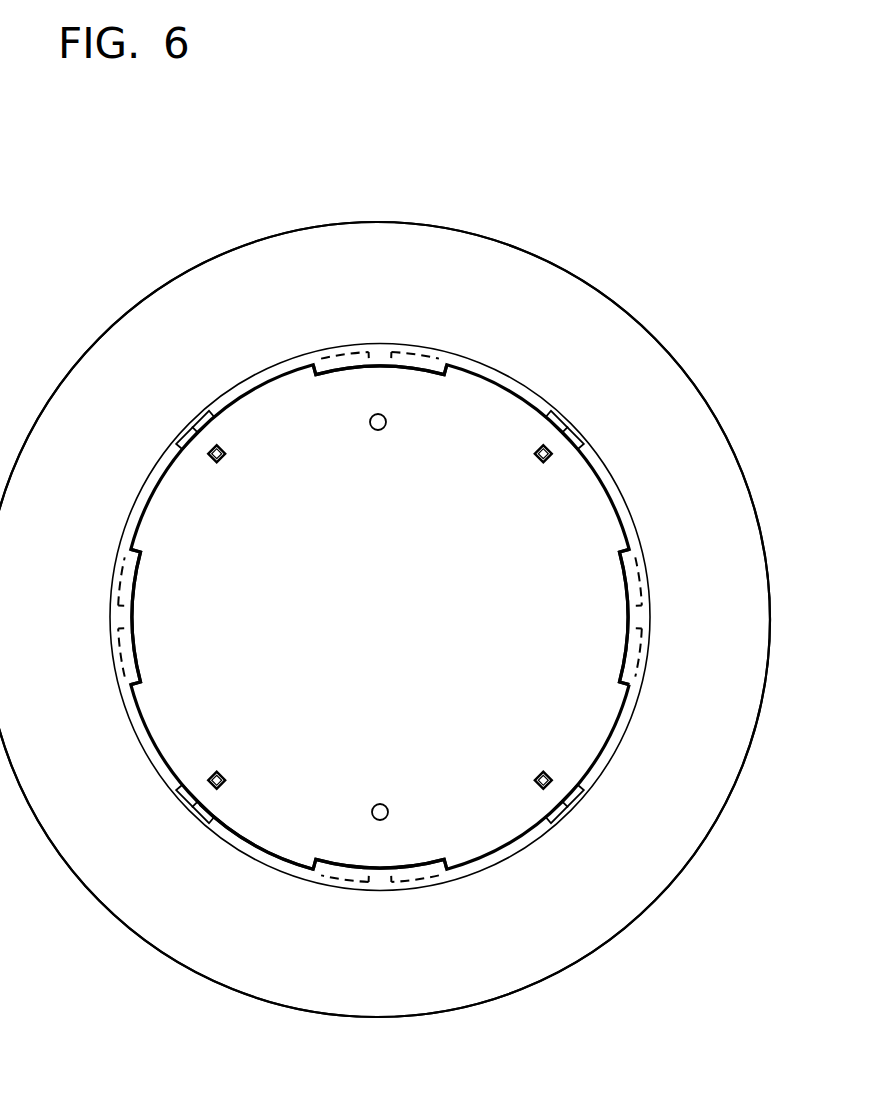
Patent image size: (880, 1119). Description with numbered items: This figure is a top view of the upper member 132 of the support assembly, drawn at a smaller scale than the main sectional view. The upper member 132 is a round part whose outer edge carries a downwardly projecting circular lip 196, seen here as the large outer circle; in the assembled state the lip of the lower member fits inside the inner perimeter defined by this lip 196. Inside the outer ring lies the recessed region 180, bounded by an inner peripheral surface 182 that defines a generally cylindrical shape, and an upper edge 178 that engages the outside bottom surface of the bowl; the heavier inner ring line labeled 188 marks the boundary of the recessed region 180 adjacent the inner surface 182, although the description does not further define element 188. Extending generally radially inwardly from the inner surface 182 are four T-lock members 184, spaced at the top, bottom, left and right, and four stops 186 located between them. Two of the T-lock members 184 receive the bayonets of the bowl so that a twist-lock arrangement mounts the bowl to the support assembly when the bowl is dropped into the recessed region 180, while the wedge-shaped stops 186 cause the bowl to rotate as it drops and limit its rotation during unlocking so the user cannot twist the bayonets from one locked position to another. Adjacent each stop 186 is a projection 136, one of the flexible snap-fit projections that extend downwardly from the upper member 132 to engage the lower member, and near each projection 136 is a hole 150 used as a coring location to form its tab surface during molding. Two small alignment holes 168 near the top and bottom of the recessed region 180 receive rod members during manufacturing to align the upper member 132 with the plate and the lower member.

The upper member 132 is at (532, 222).
The projections 136 is at (226, 458).
The holes 150 is at (218, 445).
The alignment holes 168 is at (380, 430).
The upper edge 178 is at (501, 376).
The recessed region 180 is at (407, 634).
The inner peripheral surface 182 is at (270, 857).
The T-lock members 184 is at (333, 369).
The stops 186 is at (183, 452).
The inner ring 188 is at (592, 513).
The circular lip 196 is at (648, 912).